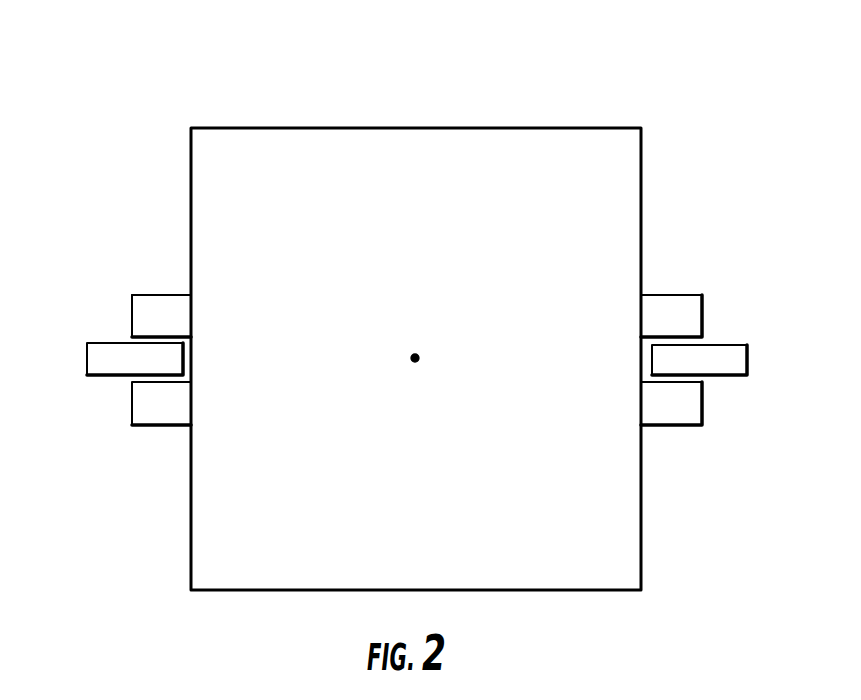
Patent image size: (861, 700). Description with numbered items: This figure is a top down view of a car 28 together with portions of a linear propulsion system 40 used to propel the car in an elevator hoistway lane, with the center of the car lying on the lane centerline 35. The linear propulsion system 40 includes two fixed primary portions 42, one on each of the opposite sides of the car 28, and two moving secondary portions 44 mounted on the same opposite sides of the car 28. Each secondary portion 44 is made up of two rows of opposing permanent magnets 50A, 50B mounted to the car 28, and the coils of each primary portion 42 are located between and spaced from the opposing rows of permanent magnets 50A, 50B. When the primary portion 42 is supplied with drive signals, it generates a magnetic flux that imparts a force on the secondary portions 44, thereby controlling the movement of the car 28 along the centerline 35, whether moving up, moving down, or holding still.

The car 28 is at (460, 128).
The centerline 35 is at (415, 358).
The linear propulsion system 40 is at (708, 113).
The primary portion 42 is at (86, 376).
The secondary portion 44 is at (162, 295).
The permanent magnets 50A is at (131, 322).
The permanent magnets 50B is at (158, 427).